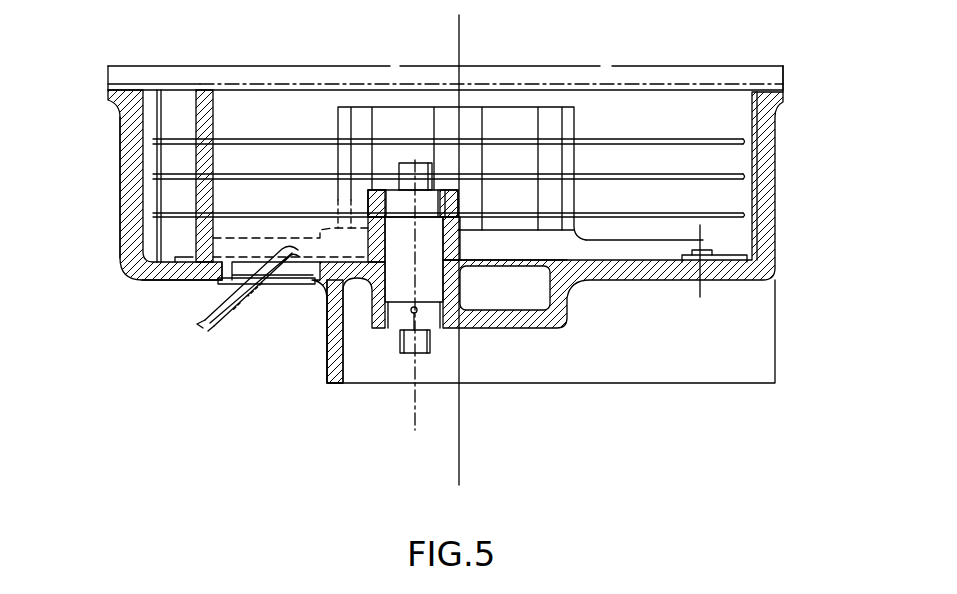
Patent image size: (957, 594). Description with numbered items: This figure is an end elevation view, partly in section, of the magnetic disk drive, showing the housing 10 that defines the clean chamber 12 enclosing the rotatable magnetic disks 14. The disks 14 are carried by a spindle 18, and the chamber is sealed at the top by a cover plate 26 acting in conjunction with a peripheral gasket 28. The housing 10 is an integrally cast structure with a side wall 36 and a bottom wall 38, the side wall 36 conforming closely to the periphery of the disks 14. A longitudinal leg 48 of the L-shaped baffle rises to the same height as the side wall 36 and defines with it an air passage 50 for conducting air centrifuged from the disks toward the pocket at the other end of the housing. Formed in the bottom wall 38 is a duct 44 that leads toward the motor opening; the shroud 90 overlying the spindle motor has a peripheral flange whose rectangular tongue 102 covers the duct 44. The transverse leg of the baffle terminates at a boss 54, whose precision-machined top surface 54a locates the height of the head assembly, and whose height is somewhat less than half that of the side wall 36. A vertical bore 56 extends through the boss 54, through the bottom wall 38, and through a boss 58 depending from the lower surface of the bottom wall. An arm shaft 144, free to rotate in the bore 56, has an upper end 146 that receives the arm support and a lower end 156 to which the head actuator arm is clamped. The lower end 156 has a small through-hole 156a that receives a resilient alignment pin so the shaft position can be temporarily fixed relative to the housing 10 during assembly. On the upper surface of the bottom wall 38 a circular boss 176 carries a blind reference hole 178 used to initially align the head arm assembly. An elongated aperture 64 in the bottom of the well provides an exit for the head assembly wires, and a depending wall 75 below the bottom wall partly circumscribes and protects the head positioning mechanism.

The housing 10 is at (110, 179).
The clean chamber 12 is at (255, 105).
The magnetic disks 14 is at (755, 141).
The spindle 18 is at (549, 107).
The cover plate 26 is at (785, 80).
The peripheral gasket 28 is at (785, 92).
The side wall 36 is at (120, 135).
The bottom wall 38 is at (158, 281).
The duct 44 is at (530, 284).
The leg of baffle 48 is at (192, 100).
The air passage 50 is at (155, 100).
The boss 54 is at (460, 205).
The top surface of boss 54a is at (445, 190).
The vertical bore 56 is at (428, 288).
The depending boss 58 is at (372, 312).
The elongated aperture 64 is at (305, 268).
The depending wall 75 is at (678, 322).
The shroud 90 is at (618, 240).
The tongue 102 is at (470, 258).
The arm shaft 144 is at (405, 288).
The upper end of arm shaft 146 is at (405, 163).
The lower end of arm shaft 156 is at (398, 352).
The through-hole 156a is at (418, 330).
The circular boss 176 is at (727, 252).
The blind reference hole 178 is at (705, 252).